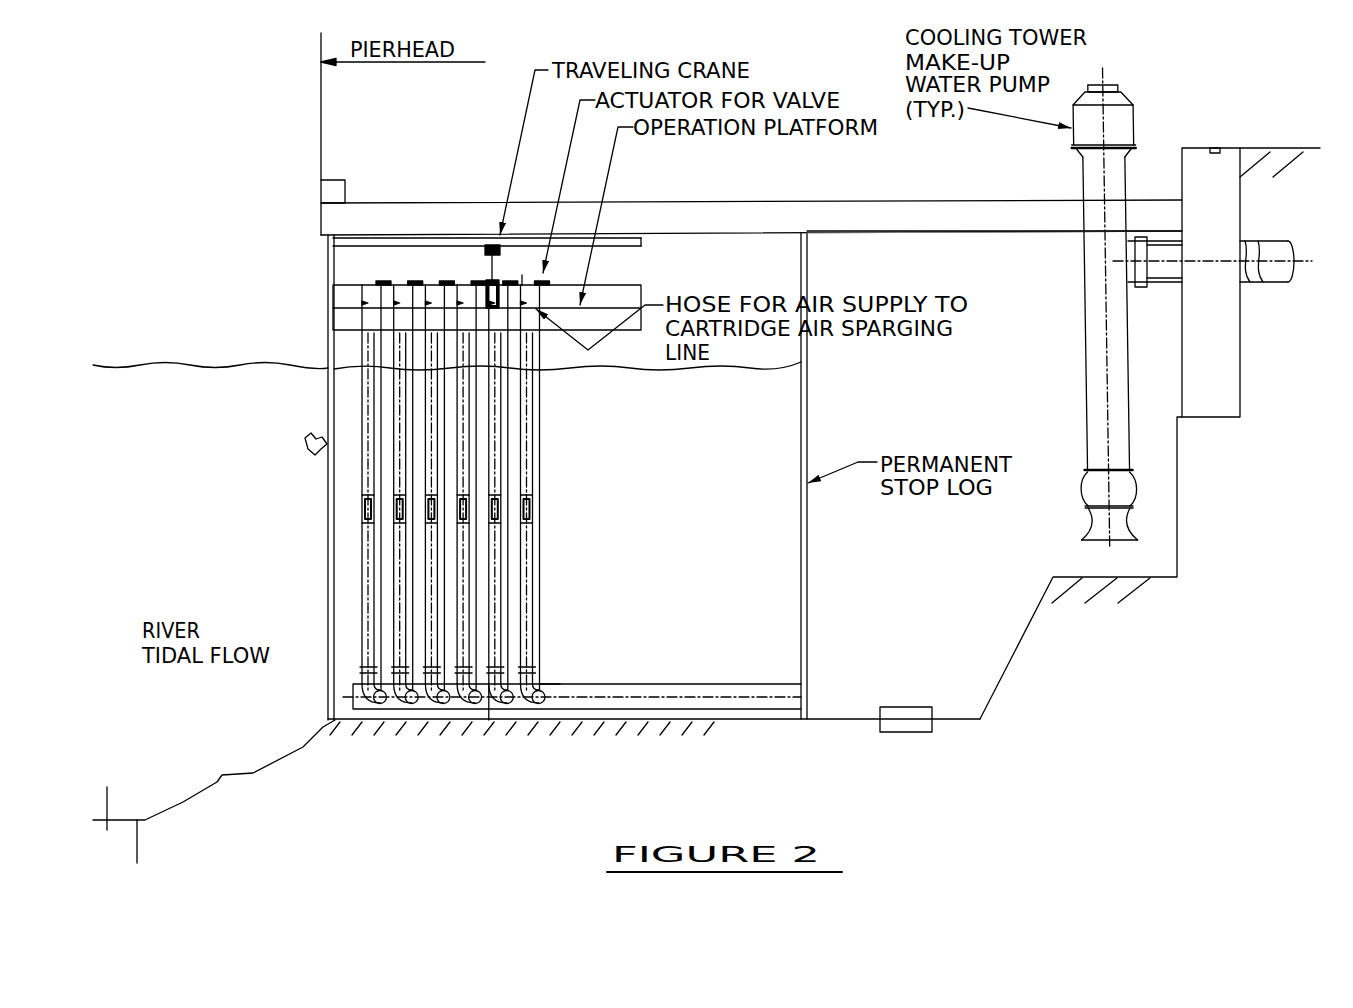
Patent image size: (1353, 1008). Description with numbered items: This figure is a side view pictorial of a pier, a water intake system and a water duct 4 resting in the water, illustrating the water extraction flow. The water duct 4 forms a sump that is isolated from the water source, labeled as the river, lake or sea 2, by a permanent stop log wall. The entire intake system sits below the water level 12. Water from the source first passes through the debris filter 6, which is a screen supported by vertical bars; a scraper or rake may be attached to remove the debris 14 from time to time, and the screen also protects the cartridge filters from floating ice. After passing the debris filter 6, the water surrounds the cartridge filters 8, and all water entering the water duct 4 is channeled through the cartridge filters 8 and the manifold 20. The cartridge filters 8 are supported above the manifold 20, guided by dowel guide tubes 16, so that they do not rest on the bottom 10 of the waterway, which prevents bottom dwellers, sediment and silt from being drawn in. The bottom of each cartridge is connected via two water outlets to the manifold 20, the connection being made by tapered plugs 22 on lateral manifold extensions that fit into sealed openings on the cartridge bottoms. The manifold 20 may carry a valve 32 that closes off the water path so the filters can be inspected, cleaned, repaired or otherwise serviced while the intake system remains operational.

The river, lake or sea 2 is at (214, 625).
The water duct 4 is at (994, 210).
The debris filter 6 is at (228, 477).
The cartridge filters 8 is at (378, 623).
The bottom 10 is at (654, 747).
The water level 12 is at (447, 329).
The debris 14 is at (225, 467).
The dowel guide tubes 16 is at (385, 505).
The manifold 20 is at (610, 752).
The tapered plugs 22 is at (761, 643).
The valve 32 is at (410, 756).